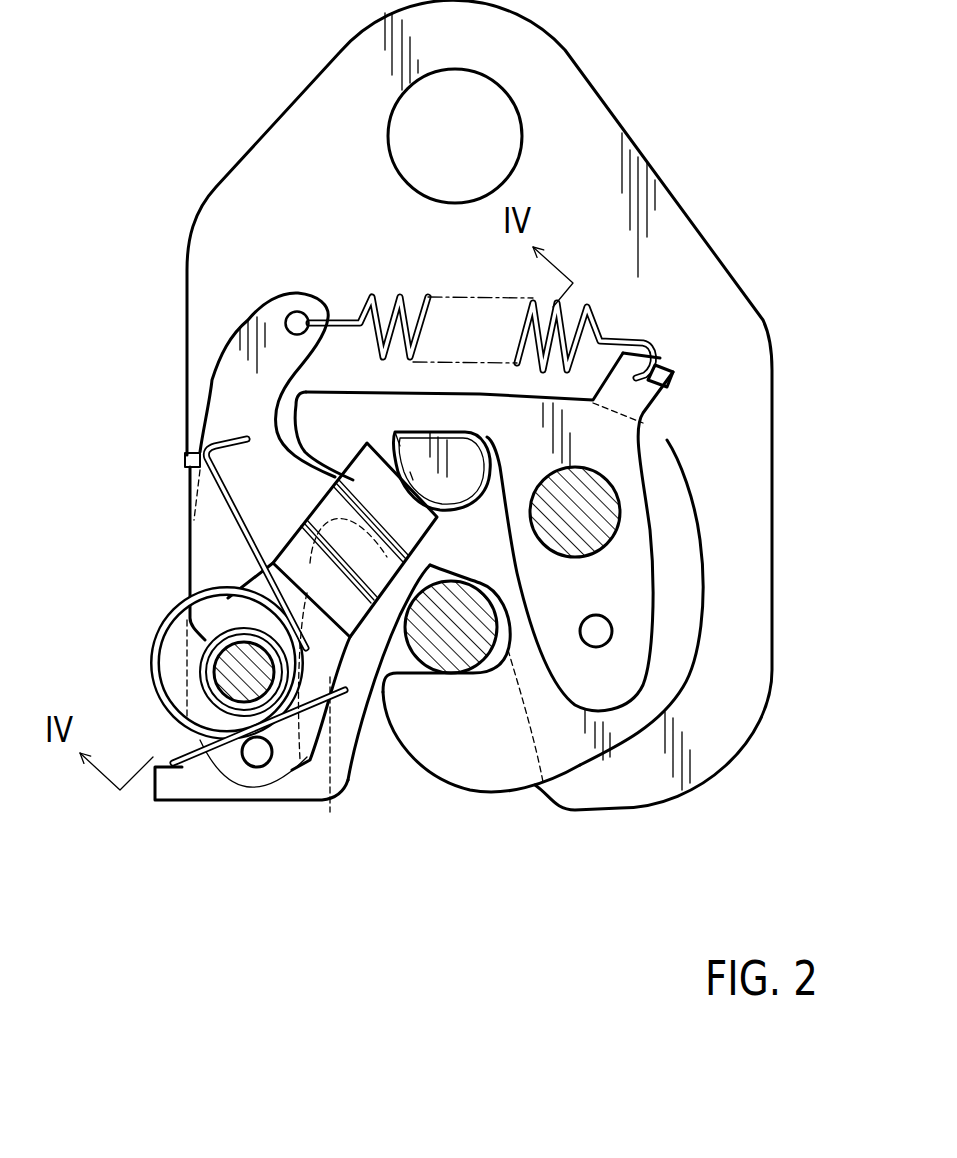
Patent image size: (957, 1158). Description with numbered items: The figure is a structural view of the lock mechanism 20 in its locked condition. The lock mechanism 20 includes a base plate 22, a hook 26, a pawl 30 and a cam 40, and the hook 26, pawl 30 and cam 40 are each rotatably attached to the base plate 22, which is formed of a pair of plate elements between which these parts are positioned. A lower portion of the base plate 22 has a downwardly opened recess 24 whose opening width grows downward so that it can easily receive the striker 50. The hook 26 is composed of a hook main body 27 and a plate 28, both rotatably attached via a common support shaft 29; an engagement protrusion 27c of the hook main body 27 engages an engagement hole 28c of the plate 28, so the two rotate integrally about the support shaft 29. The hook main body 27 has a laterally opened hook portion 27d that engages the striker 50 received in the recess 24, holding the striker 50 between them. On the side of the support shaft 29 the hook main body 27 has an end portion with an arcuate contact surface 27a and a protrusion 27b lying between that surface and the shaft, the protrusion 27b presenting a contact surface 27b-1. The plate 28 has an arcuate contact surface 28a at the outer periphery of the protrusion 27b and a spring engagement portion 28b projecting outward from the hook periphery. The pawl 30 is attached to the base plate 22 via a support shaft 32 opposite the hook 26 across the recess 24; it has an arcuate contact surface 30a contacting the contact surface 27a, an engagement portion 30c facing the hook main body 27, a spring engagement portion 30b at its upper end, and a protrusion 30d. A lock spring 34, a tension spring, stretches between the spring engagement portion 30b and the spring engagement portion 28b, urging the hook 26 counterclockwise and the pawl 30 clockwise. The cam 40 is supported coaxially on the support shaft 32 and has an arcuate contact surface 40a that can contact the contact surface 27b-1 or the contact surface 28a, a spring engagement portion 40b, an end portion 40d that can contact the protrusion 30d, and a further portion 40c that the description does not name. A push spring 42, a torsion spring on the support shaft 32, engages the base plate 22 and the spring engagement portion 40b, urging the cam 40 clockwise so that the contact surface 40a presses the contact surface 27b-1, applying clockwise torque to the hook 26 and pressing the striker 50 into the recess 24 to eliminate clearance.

The lock mechanism 20 is at (479, 405).
The base plate 22 is at (590, 113).
The recess 24 is at (457, 583).
The hook 26 is at (680, 444).
The hook main body 27 is at (580, 757).
The arcuate contact surface 27a is at (290, 404).
The protrusion 27b is at (457, 483).
The contact surface 27b-1 is at (411, 456).
The engagement protrusion 27c is at (637, 693).
The hook portion 27d is at (537, 660).
The plate 28 is at (637, 583).
The arcuate contact surface 28a is at (430, 393).
The spring engagement portion 28b is at (670, 364).
The engagement hole 28c is at (600, 618).
The support shaft 29 is at (580, 517).
The pawl 30 is at (265, 527).
The arcuate contact surface 30a is at (333, 812).
The spring engagement portion 30b is at (282, 306).
The engagement portion 30c is at (330, 492).
The protrusion 30d is at (255, 762).
The support shaft 32 is at (242, 668).
The lock spring 34 is at (400, 298).
The cam 40 is at (300, 597).
The arcuate contact surface 40a is at (413, 480).
The spring engagement portion 40b is at (187, 460).
The spring second arm 40c is at (343, 555).
The end portion 40d is at (313, 780).
The push spring 42 is at (262, 565).
The striker 50 is at (470, 657).